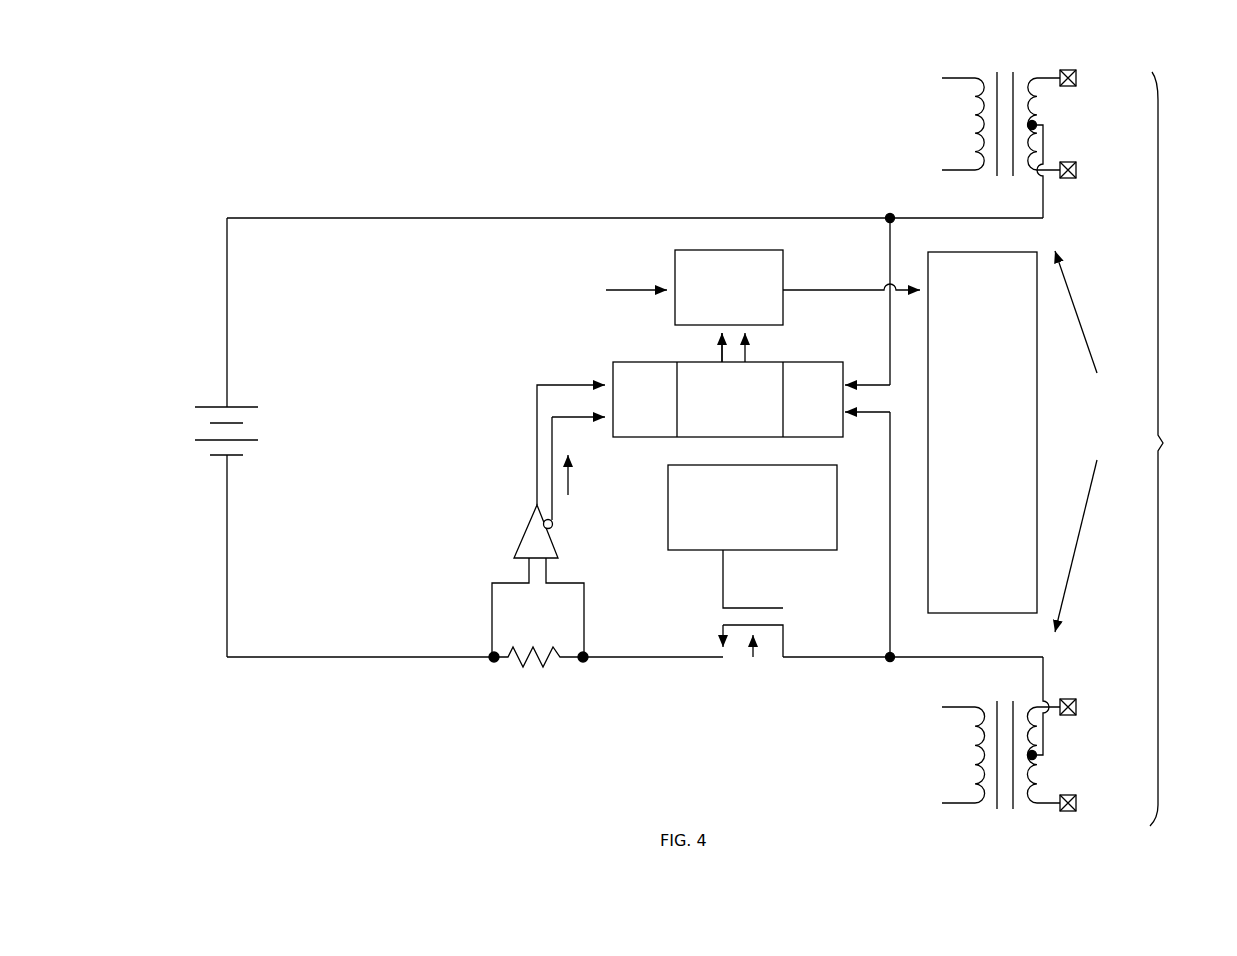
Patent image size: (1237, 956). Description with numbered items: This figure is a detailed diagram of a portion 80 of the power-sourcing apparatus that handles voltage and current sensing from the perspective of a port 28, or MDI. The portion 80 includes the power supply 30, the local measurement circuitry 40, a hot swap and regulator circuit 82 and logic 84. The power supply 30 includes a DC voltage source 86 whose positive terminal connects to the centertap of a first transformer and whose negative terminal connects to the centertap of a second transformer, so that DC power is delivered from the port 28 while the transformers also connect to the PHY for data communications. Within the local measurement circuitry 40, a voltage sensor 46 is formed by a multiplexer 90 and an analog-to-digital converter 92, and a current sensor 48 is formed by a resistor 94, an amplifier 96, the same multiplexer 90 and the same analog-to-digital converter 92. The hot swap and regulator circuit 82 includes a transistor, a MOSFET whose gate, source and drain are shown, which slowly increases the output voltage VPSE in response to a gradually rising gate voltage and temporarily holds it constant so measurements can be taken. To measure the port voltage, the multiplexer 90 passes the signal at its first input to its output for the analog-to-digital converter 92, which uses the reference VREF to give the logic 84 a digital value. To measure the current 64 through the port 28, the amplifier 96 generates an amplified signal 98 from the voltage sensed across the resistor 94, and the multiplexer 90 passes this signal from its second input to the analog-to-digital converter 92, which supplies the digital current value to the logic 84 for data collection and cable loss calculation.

The port 28 is at (1184, 132).
The power supply 30 is at (242, 380).
The local measurement circuitry 40 is at (542, 470).
The voltage sensor 46 is at (820, 266).
The current sensor 48 is at (522, 425).
The current 64 is at (610, 681).
The portion 80 is at (372, 128).
The hot swap and regulator circuit 82 is at (836, 579).
The logic 84 is at (1033, 441).
The DC voltage source 86 is at (253, 427).
The multiplexer 90 is at (728, 385).
The analog-to-digital converter 92 is at (666, 287).
The resistor 94 is at (483, 682).
The amplifier 96 is at (558, 548).
The amplified signal 98 is at (568, 482).